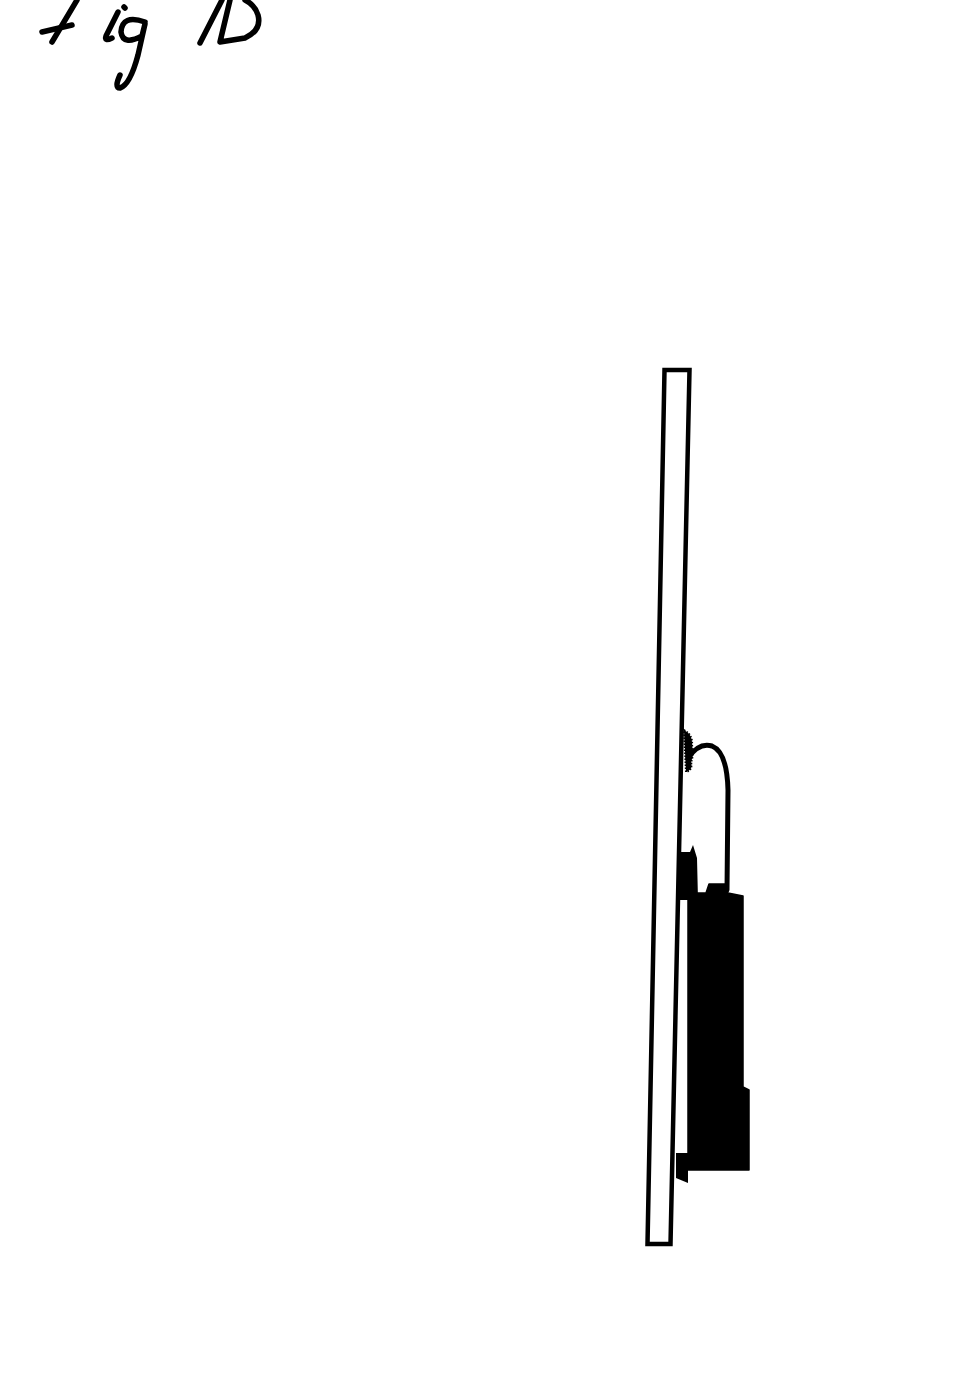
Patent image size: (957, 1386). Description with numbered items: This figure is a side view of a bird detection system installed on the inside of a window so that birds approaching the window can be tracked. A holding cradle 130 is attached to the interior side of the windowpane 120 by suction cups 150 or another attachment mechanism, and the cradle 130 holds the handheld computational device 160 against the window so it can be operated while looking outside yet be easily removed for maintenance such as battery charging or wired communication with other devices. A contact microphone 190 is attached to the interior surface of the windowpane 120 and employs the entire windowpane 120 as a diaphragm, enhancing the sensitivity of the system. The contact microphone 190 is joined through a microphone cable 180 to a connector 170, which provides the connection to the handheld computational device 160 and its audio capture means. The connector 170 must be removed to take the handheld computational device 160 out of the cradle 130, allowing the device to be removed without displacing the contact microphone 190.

The windowpane 120 is at (695, 807).
The holding cradle 130 is at (744, 1131).
The suction cups 150 is at (647, 1014).
The handheld computational device 160 is at (740, 1027).
The connector 170 is at (736, 888).
The microphone cable 180 is at (733, 817).
The contact microphone 190 is at (711, 725).